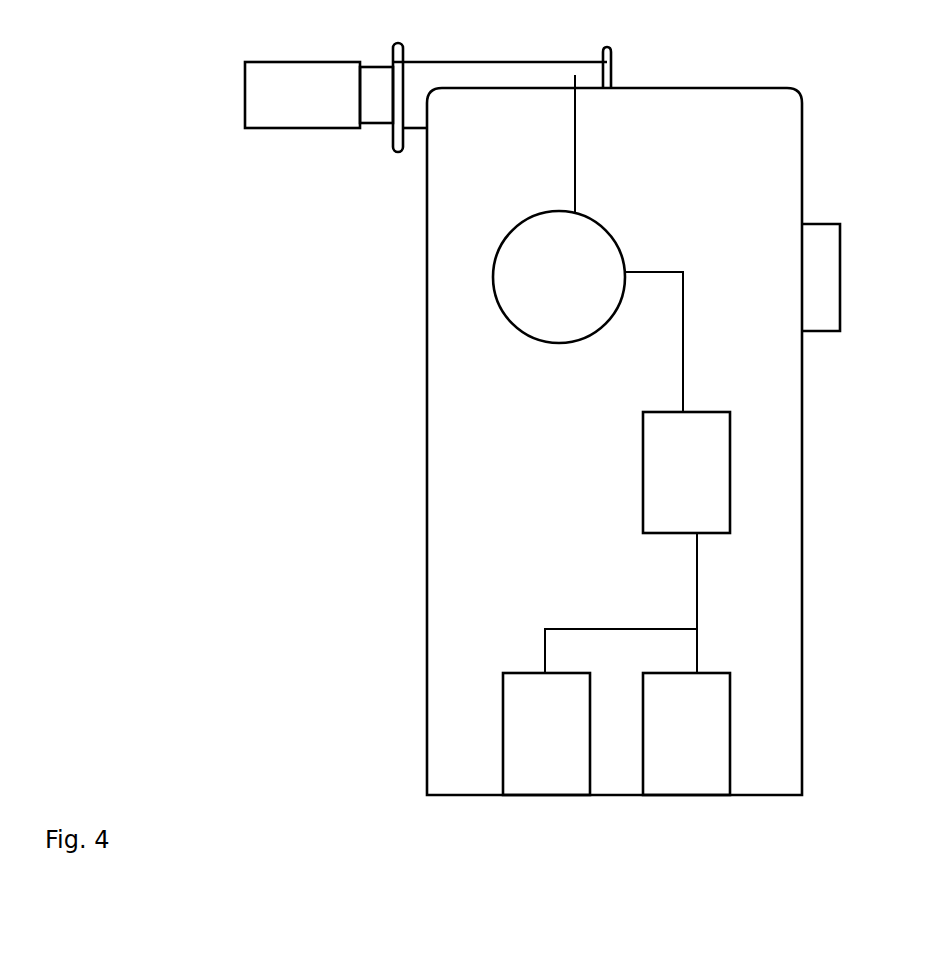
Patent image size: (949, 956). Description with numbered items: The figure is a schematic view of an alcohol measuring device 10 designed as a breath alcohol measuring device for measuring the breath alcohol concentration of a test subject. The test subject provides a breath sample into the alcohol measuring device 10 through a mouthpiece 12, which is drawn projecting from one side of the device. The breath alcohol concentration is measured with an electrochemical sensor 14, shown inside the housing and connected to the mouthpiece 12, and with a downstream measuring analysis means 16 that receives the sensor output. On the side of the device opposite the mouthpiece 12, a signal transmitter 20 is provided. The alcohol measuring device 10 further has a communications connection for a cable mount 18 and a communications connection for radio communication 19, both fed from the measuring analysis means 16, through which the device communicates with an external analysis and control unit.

The alcohol measuring device 10 is at (797, 121).
The mouthpiece 12 is at (282, 113).
The electrochemical sensor 14 is at (512, 251).
The measuring analysis means 16 is at (698, 466).
The communications connection for cable mounting 18 is at (555, 762).
The communications connection for wireless communication 19 is at (687, 762).
The signal transmitter 20 is at (826, 289).